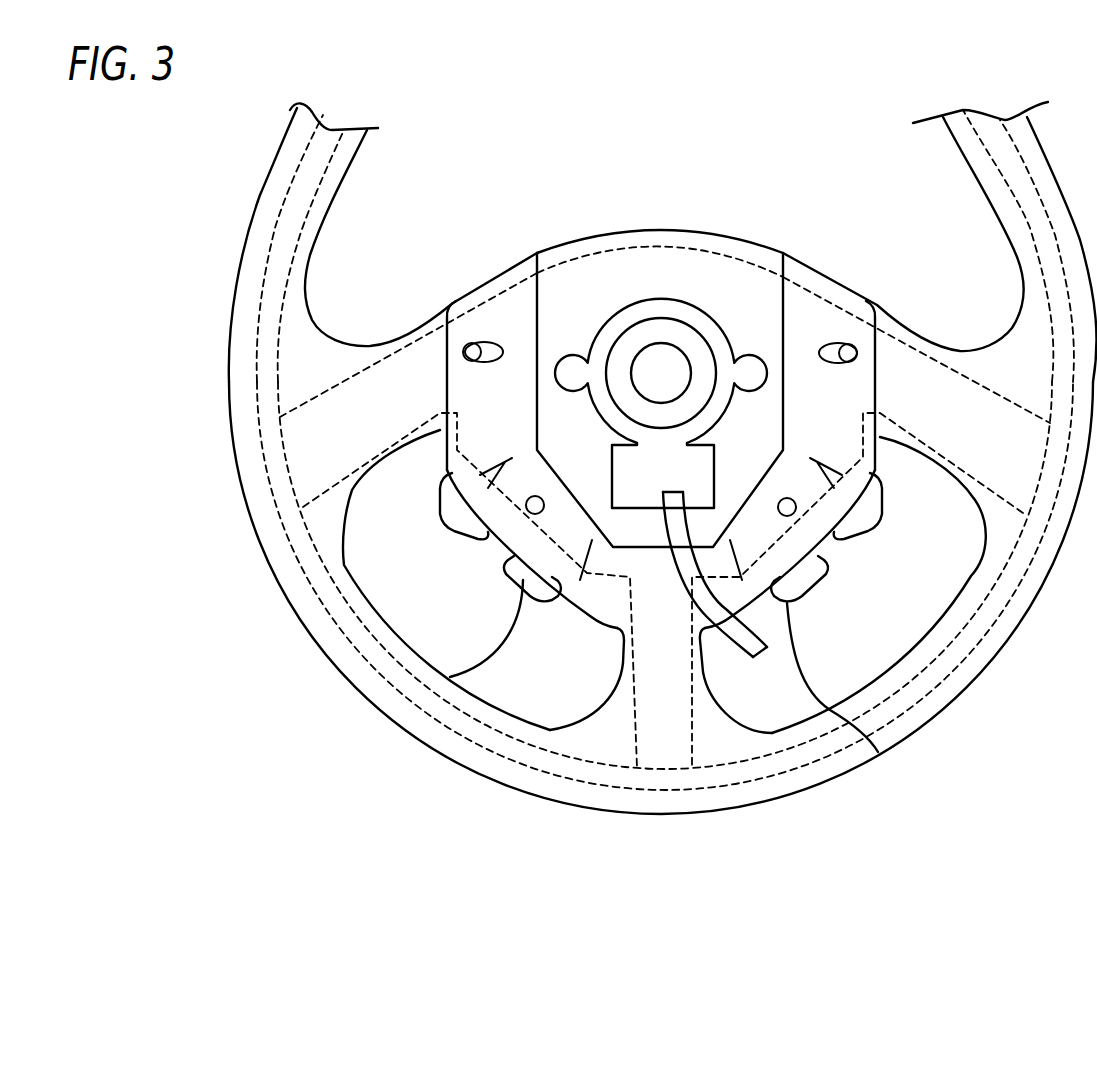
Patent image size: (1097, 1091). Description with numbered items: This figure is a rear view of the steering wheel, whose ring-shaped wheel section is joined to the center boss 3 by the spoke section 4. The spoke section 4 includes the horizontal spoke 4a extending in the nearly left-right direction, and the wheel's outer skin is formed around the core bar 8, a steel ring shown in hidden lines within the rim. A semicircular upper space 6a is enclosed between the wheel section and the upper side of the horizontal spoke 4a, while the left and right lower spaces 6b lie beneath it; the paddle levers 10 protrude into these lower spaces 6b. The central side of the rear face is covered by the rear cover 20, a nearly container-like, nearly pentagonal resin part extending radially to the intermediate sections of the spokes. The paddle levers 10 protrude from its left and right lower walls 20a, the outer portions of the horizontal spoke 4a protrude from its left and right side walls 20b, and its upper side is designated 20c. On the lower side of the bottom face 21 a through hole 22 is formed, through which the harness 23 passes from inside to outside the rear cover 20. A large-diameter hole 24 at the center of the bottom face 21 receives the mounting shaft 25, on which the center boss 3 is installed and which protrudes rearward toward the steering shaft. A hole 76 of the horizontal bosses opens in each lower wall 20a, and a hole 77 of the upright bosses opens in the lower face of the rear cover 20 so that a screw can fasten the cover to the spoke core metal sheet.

The center boss 3 is at (643, 308).
The spoke section 4 is at (322, 381).
The horizontal spoke 4a is at (403, 375).
The upper space 6a is at (676, 81).
The lower spaces 6b is at (370, 518).
The core bar 8 is at (307, 175).
The paddle levers 10 is at (453, 517).
The rear cover 20 is at (727, 245).
The lower walls 20a is at (563, 575).
The side walls 20b is at (527, 300).
The upper side 20c is at (771, 236).
The bottom face 21 is at (697, 262).
The through hole 22 is at (637, 490).
The harness 23 is at (735, 645).
The large-diameter hole 24 is at (600, 322).
The mounting shaft 25 is at (673, 332).
The hole 76 is at (530, 513).
The hole 77 is at (473, 342).